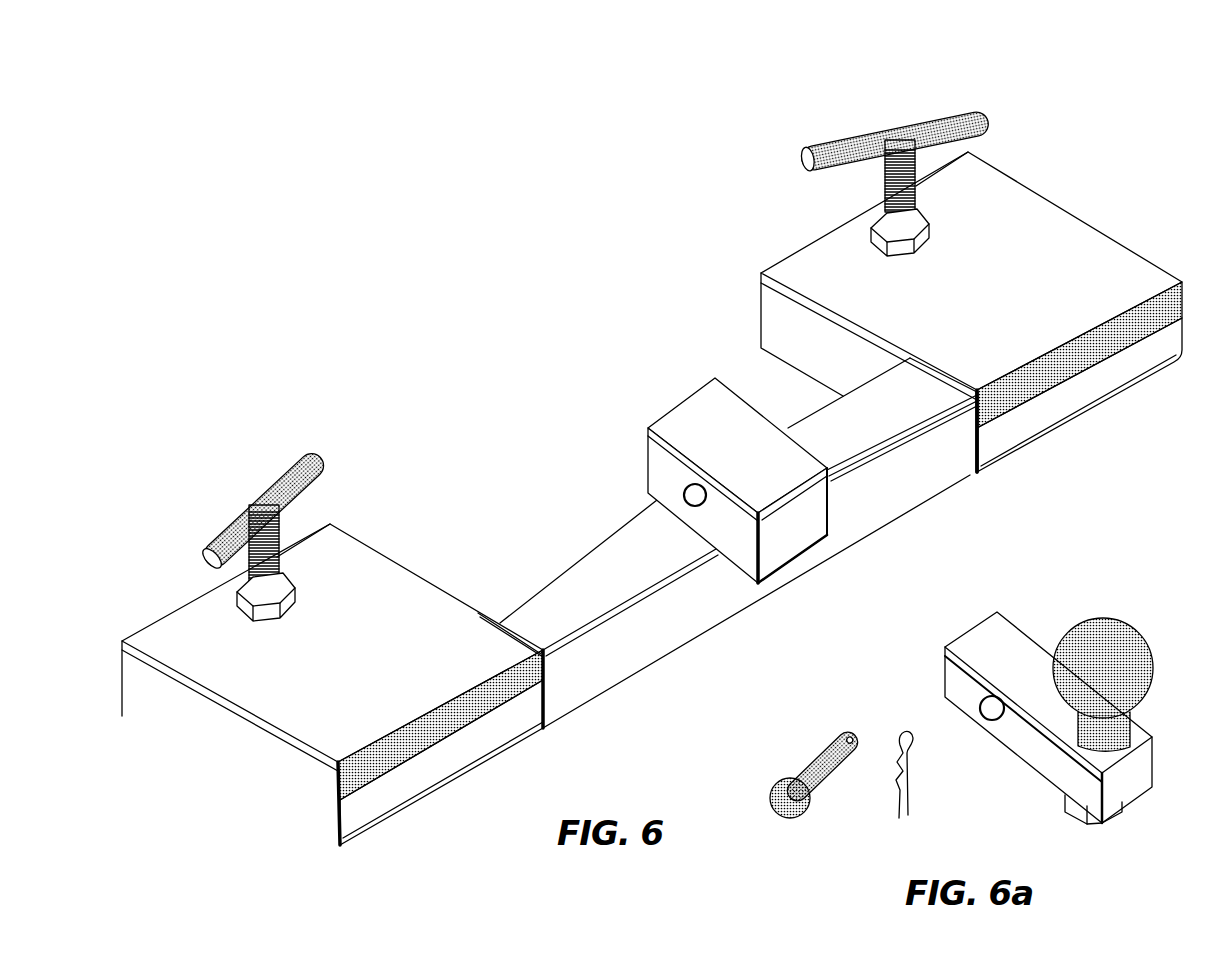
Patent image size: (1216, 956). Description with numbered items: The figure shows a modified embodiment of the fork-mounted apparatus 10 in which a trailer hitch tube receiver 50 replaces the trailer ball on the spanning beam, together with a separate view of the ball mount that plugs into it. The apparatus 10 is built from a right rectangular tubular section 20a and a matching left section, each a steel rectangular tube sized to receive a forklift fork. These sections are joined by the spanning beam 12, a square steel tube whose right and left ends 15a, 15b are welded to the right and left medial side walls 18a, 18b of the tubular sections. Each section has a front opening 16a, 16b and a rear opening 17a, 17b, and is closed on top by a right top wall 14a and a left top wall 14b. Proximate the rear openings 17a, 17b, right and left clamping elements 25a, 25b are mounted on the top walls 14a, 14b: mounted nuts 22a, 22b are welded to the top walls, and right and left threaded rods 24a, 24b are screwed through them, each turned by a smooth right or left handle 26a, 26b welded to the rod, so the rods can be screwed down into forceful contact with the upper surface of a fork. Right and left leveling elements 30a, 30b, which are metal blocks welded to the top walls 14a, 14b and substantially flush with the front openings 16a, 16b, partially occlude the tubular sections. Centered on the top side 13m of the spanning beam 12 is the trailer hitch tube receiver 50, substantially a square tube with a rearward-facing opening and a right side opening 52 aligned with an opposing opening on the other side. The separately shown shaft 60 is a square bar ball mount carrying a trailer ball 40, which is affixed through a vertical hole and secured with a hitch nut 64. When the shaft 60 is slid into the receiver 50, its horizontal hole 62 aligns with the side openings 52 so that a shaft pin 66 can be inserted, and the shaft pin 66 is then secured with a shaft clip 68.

In FIG. 6, the apparatus 10 is at (520, 100).
In FIG. 6, the spanning beam 12 is at (727, 600).
In FIG. 6, the top side of the spanning beam 13m is at (655, 558).
In FIG. 6, the right top wall 14a is at (362, 677).
In FIG. 6, the left top wall 14b is at (1014, 271).
In FIG. 6, the right end of the spanning beam 15a is at (547, 702).
In FIG. 6, the left end of the spanning beam 15b is at (973, 478).
In FIG. 6, the right front opening 16a is at (432, 763).
In FIG. 6, the left front opening 16b is at (1105, 382).
In FIG. 6, the right rear opening 17a is at (544, 730).
In FIG. 6, the left rear opening 17b is at (985, 447).
In FIG. 6, the right medial side wall 18a is at (493, 610).
In FIG. 6, the left medial side wall 18b is at (855, 355).
In FIG. 6, the right rectangular tubular section 20a is at (462, 507).
In FIG. 6, the right mounted nut 22a is at (296, 590).
In FIG. 6, the left mounted nut 22b is at (929, 224).
In FIG. 6, the right threaded rod 24a is at (279, 541).
In FIG. 6, the left threaded rod 24b is at (883, 197).
In FIG. 6, the right clamping element 25a is at (175, 418).
In FIG. 6, the left clamping element 25b is at (810, 127).
In FIG. 6, the right handle 26a is at (313, 452).
In FIG. 6, the left handle 26b is at (903, 130).
In FIG. 6, the right leveling element 30a is at (383, 765).
In FIG. 6, the left leveling element 30b is at (1048, 380).
In FIG. 6A, the trailer ball 40 is at (1125, 638).
In FIG. 6, the trailer hitch tube receiver 50 is at (710, 408).
In FIG. 6, the right side opening 52 is at (683, 494).
In FIG. 6A, the shaft 60 is at (1024, 675).
In FIG. 6A, the horizontal hole 62 is at (980, 712).
In FIG. 6A, the hitch nut 64 is at (1123, 812).
In FIG. 6A, the shaft pin 66 is at (823, 777).
In FIG. 6A, the shaft clip 68 is at (908, 780).